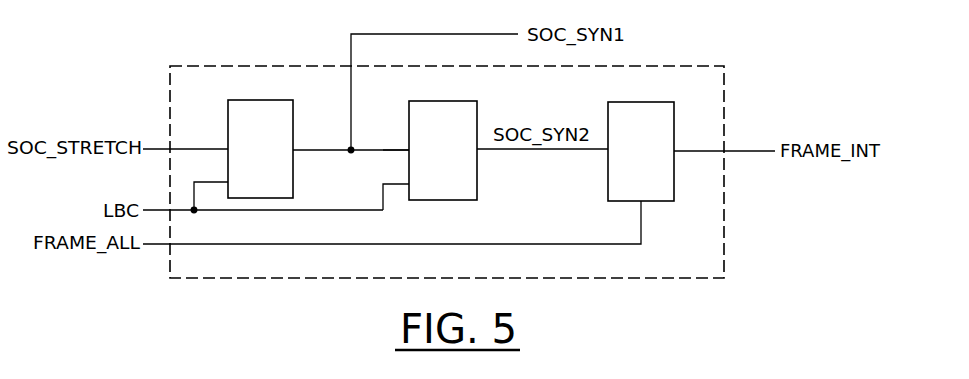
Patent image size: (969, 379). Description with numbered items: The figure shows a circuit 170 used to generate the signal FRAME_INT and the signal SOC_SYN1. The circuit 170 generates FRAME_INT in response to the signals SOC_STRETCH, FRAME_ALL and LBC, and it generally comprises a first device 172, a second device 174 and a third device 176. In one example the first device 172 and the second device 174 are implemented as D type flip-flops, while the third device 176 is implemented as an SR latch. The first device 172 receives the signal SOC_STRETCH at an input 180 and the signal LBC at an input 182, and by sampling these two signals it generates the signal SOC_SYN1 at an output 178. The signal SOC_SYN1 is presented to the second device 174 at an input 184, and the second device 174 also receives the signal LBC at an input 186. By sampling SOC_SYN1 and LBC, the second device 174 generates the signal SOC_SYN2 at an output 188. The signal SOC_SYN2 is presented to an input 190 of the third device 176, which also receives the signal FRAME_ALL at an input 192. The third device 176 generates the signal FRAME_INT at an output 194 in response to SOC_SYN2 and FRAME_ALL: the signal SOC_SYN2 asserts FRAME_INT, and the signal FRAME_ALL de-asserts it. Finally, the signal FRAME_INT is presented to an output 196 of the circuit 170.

The circuit 170 is at (205, 22).
The first device 172 is at (277, 100).
The second device 174 is at (465, 101).
The third device 176 is at (660, 102).
The output 178 is at (299, 150).
The input 180 is at (223, 149).
The input 182 is at (224, 182).
The input 184 is at (404, 149).
The input 186 is at (405, 184).
The output 188 is at (480, 150).
The input 190 is at (600, 150).
The input 192 is at (645, 202).
The output 194 is at (680, 152).
The output 196 is at (730, 152).